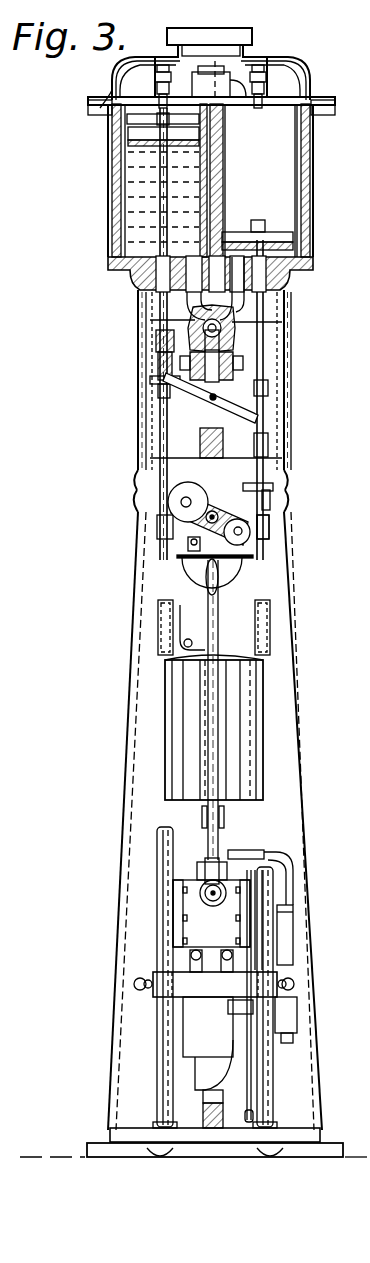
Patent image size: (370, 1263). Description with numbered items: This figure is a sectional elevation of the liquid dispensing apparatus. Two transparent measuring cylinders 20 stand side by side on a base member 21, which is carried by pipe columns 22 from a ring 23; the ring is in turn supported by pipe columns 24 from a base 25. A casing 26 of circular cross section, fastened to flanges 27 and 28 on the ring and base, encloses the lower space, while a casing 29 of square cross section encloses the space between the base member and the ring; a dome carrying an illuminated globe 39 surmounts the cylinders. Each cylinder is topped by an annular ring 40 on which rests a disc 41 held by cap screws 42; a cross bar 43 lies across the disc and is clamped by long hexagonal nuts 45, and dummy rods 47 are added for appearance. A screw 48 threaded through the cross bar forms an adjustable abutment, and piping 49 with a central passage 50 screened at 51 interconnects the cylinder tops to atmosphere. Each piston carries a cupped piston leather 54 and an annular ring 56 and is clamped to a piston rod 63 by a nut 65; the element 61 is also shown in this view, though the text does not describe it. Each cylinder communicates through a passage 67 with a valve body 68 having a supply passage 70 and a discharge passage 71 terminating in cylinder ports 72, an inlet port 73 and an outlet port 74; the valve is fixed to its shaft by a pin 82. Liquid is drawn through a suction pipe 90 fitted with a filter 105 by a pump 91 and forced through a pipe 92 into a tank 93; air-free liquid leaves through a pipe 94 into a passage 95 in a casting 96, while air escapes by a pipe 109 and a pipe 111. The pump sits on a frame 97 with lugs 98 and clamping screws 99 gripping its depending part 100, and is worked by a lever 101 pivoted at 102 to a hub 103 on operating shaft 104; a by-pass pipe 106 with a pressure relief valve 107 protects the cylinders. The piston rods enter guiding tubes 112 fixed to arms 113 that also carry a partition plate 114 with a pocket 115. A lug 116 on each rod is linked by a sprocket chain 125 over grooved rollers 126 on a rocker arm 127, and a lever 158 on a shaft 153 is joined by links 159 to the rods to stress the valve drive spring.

The measuring cylinder 20 is at (123, 209).
The base member 21 is at (283, 272).
The pipe column 22 is at (140, 452).
The ring 23 is at (136, 482).
The pipe column 24 is at (158, 1038).
The base 25 is at (90, 1150).
The casing 26 is at (140, 538).
The flange 27 is at (138, 514).
The flange 28 is at (125, 1135).
The casing 29 is at (280, 447).
The illuminated globe 39 is at (105, 75).
The annular ring 40 is at (110, 100).
The disc 41 is at (145, 75).
The cap screw 42 is at (100, 105).
The cross bar 43 is at (156, 85).
The hexagonal nut 45 is at (163, 62).
The dummy rod 47 is at (110, 168).
The screw 48 is at (115, 128).
The piping 49 is at (210, 45).
The central passage 50 is at (218, 68).
The screen 51 is at (204, 75).
The piston leather 54 is at (150, 140).
The annular ring 56 is at (195, 147).
The right pipe 61 is at (250, 300).
The piston rod 63 is at (160, 208).
The nut 65 is at (170, 120).
The passage 67 is at (186, 285).
The valve body 68 is at (236, 348).
The supply passage 70 is at (158, 360).
The discharge passage 71 is at (190, 300).
The cylinder port 72 is at (160, 320).
The inlet port 73 is at (232, 360).
The outlet port 74 is at (240, 318).
The pin 82 is at (160, 344).
The suction pipe 90 is at (205, 1110).
The pump 91 is at (211, 913).
The discharge pipe 92 is at (205, 818).
The tank 93 is at (185, 730).
The pipe 94 is at (220, 612).
The passage 95 is at (245, 368).
The casting 96 is at (210, 438).
The frame 97 is at (160, 990).
The lug 98 is at (215, 984).
The clamping screw 99 is at (232, 955).
The depending part 100 is at (263, 955).
The lever 101 is at (213, 698).
The pivot 102 is at (197, 868).
The hub 103 is at (280, 880).
The operating shaft 104 is at (200, 893).
The filter 105 is at (200, 1068).
The by-pass pipe 106 is at (293, 915).
The pressure relief valve 107 is at (297, 1005).
The pipe 109 is at (178, 618).
The pipe 111 is at (252, 1100).
The guiding tube 112 is at (165, 610).
The arm 113 is at (255, 524).
The partition plate 114 is at (240, 568).
The pocket 115 is at (225, 578).
The lug 116 is at (150, 379).
The sprocket chain 125 is at (150, 424).
The grooved roller 126 is at (270, 532).
The rocker arm 127 is at (278, 508).
The shaft 153 is at (218, 398).
The lever 158 is at (190, 396).
The link 159 is at (270, 428).